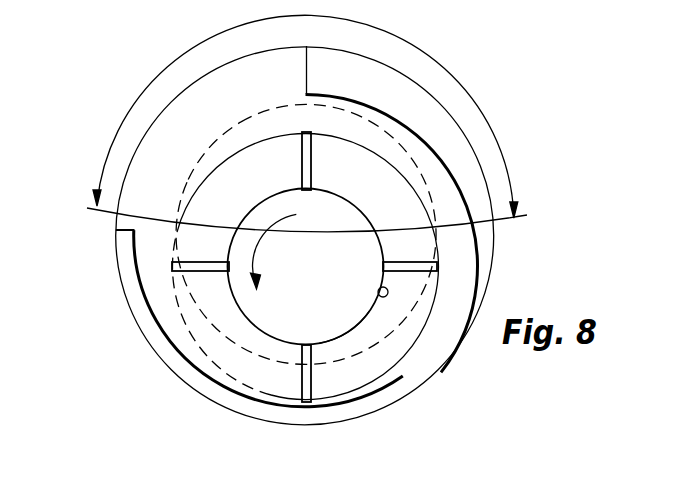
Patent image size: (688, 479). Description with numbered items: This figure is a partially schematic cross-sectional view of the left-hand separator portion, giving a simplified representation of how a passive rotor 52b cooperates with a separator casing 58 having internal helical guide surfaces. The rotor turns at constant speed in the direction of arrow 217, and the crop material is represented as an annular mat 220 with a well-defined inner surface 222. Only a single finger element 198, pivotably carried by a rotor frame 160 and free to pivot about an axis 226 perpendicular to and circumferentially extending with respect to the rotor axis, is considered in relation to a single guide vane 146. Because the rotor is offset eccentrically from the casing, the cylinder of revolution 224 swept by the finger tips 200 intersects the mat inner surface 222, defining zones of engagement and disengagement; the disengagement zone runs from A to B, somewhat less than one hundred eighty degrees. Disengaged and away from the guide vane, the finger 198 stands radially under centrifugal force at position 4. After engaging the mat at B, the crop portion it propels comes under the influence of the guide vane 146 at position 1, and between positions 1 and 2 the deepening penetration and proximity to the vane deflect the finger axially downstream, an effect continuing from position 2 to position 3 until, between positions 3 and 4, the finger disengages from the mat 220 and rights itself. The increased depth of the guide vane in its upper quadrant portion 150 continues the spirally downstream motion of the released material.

The separator casing 58 is at (147, 130).
The annular mat 220 is at (188, 170).
The guide vane 146 is at (169, 363).
The upper quadrant portion of guide vane 150 is at (362, 86).
The rotor finger tips 200 is at (299, 136).
The inner surface of mat 222 is at (273, 105).
The cylinder of revolution swept by finger tips 224 is at (220, 139).
The rotor frame 160 is at (351, 203).
The finger element 198 is at (302, 176).
The arrow indicating rotor rotation direction 217 is at (291, 219).
The finger pivot axis 226 is at (378, 291).
The passive rotor 52b is at (358, 332).
The finger position 1 is at (200, 251).
The finger position 2 is at (292, 373).
The finger position 3 is at (410, 253).
The finger position 4 is at (323, 163).